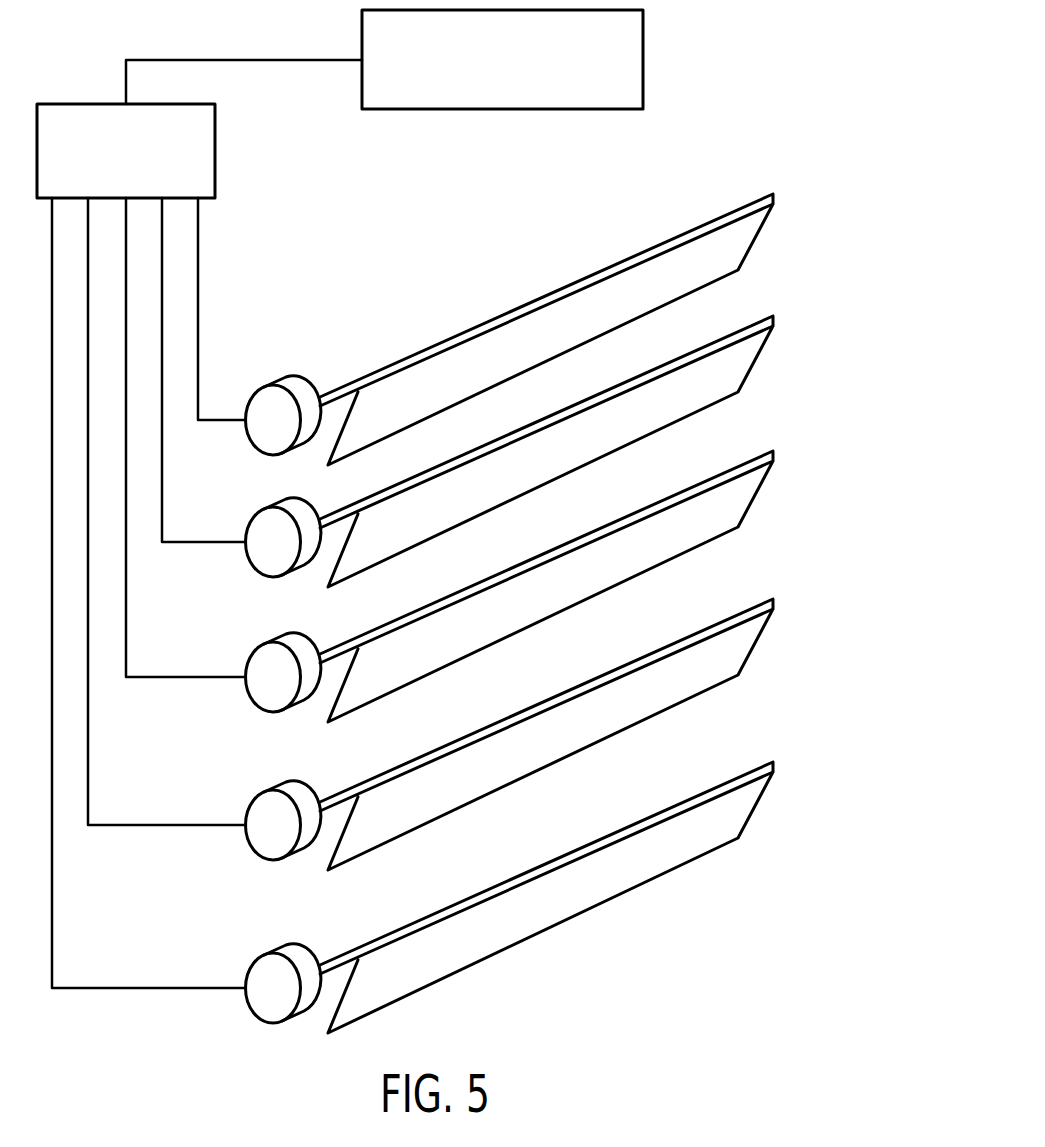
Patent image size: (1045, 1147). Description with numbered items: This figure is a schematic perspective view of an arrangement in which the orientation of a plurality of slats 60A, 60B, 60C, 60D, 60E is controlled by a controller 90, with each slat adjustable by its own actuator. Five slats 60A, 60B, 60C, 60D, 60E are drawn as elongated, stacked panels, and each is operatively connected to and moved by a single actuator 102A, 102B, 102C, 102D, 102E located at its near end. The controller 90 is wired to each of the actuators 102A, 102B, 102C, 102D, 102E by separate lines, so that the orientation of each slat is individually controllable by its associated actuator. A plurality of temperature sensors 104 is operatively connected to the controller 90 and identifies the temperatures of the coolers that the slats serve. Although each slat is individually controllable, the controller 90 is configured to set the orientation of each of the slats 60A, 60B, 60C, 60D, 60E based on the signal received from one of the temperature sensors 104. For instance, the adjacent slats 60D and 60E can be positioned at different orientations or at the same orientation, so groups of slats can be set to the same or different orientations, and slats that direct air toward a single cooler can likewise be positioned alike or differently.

The controller 90 is at (78, 103).
The temperature sensors 104 is at (644, 60).
The slat 60A is at (733, 243).
The slat 60B is at (733, 365).
The slat 60C is at (733, 500).
The slat 60D is at (733, 648).
The slat 60E is at (733, 811).
The actuator 102A is at (272, 385).
The actuator 102B is at (272, 507).
The actuator 102C is at (272, 642).
The actuator 102D is at (272, 790).
The actuator 102E is at (272, 953).